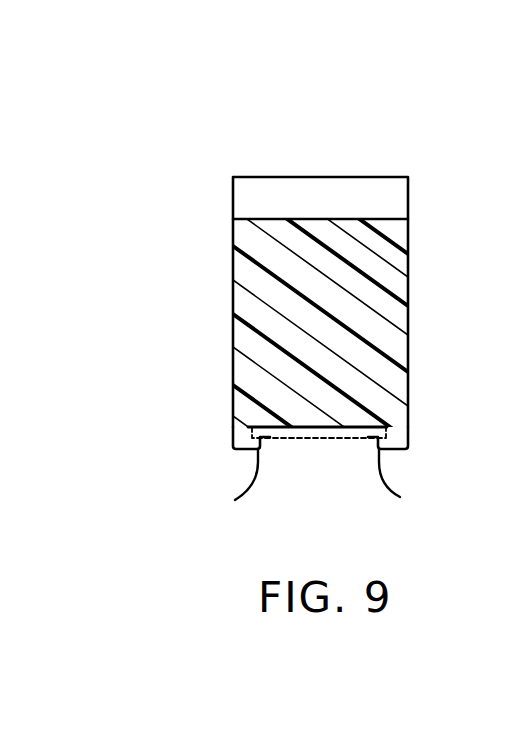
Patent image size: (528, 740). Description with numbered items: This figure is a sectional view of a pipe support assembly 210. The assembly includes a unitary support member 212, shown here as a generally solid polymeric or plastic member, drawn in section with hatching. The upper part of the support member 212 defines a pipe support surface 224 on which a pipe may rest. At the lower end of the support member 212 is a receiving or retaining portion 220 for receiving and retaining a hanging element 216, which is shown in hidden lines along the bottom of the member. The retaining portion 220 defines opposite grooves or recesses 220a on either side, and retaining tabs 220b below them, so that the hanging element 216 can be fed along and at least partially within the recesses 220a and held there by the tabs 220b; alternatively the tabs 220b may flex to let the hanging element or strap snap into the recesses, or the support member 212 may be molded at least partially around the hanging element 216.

The pipe support assembly 210 is at (372, 103).
The unitary support member 212 is at (205, 270).
The pipe support surface 224 is at (289, 200).
The receiving or retaining portion 220 is at (298, 478).
The grooves or recesses 220a is at (250, 428).
The retaining tabs 220b is at (319, 489).
The hanging element 216 is at (322, 438).